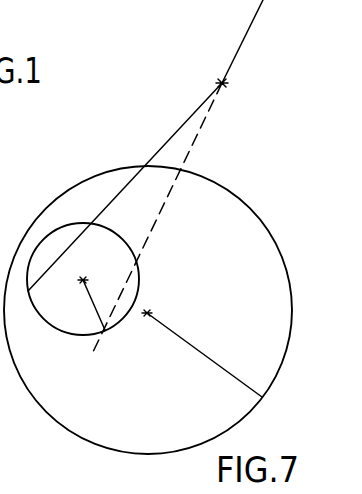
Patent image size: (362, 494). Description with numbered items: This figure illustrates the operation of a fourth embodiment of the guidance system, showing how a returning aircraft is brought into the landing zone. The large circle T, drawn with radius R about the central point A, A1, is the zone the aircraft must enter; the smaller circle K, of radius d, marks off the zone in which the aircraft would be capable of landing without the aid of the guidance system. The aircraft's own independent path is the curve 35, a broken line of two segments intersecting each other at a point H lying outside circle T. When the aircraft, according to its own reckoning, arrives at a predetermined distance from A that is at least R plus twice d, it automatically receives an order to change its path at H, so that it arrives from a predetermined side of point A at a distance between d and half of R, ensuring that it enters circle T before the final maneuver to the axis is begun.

The curve 35 is at (249, 30).
The point H is at (171, 211).
The circle T is at (115, 170).
The circle K is at (113, 232).
The radius d is at (94, 303).
The point A is at (148, 310).
The center point A1 is at (181, 318).
The radius R is at (204, 355).